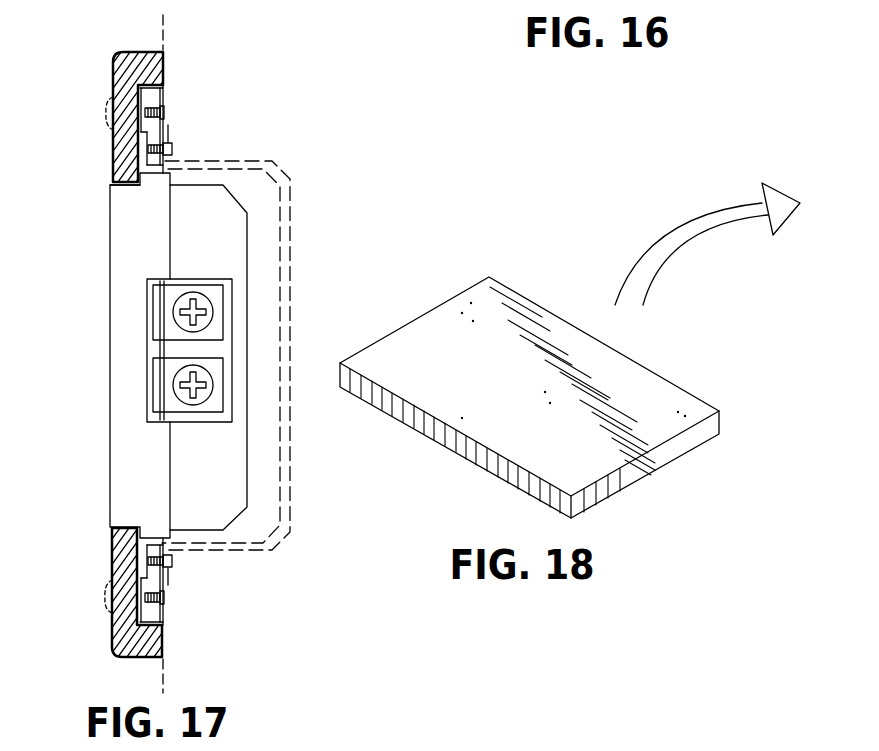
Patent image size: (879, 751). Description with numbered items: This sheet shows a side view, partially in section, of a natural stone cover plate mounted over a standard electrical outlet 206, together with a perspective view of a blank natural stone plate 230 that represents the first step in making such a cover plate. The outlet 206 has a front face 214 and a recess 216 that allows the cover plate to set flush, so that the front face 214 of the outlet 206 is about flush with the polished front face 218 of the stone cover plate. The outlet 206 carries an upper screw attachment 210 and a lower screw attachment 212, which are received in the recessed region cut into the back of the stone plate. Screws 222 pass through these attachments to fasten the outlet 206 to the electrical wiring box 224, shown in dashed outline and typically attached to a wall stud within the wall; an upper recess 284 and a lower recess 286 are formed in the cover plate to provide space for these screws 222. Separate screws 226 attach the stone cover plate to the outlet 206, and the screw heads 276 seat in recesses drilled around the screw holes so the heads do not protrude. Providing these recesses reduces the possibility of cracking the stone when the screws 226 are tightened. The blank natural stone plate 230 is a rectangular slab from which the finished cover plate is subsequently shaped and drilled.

In FIG. 17, the outlet 206 is at (96, 433).
In FIG. 17, the upper screw attachment 210 is at (165, 92).
In FIG. 17, the lower screw attachment 212 is at (162, 620).
In FIG. 17, the front face 214 is at (109, 272).
In FIG. 17, the recess 216 is at (112, 187).
In FIG. 17, the front face 218 is at (113, 160).
In FIG. 17, the screws 222 is at (168, 130).
In FIG. 17, the electrical wiring box 224 is at (300, 159).
In FIG. 17, the screws 226 is at (162, 110).
In FIG. 18, the blank natural stone plate 230 is at (635, 362).
In FIG. 17, the screw head 276 is at (113, 112).
In FIG. 17, the upper recess 284 is at (175, 158).
In FIG. 17, the lower recess 286 is at (175, 560).